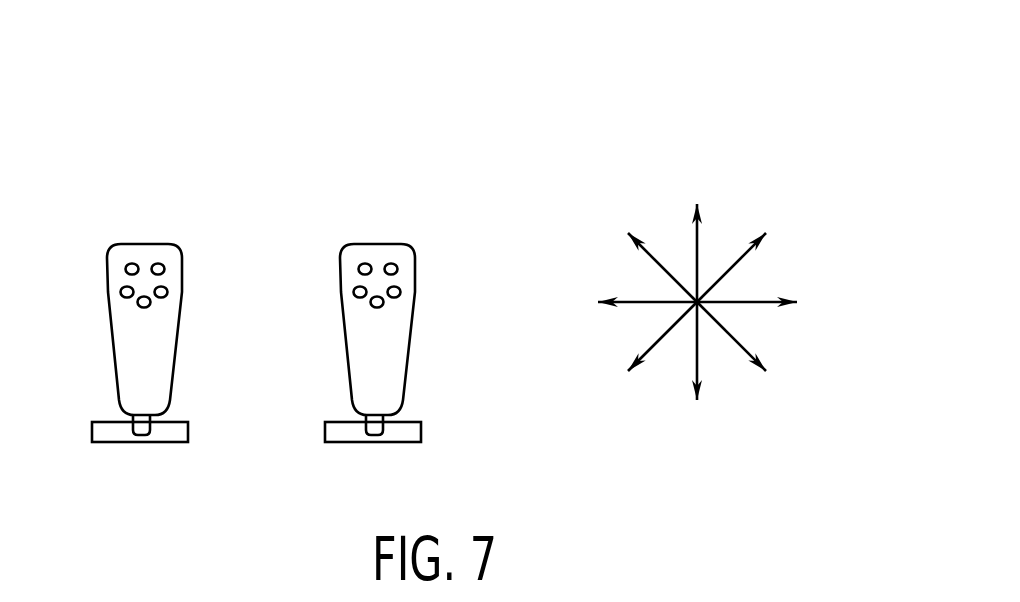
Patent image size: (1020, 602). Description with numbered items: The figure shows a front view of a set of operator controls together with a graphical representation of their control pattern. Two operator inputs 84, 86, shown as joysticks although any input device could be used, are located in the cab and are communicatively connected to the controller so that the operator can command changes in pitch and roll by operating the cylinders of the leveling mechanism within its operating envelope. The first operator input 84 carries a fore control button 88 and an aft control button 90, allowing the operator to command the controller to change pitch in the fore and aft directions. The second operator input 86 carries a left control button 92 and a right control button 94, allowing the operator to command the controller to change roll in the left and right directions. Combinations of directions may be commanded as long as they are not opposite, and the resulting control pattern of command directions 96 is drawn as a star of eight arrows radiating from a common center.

The first joystick 84 is at (170, 392).
The second joystick 86 is at (351, 387).
The first joystick left button 88 is at (120, 292).
The first joystick right button 90 is at (168, 292).
The second joystick left button 92 is at (353, 292).
The second joystick right button 94 is at (401, 292).
The directional movement arrows 96 is at (774, 187).